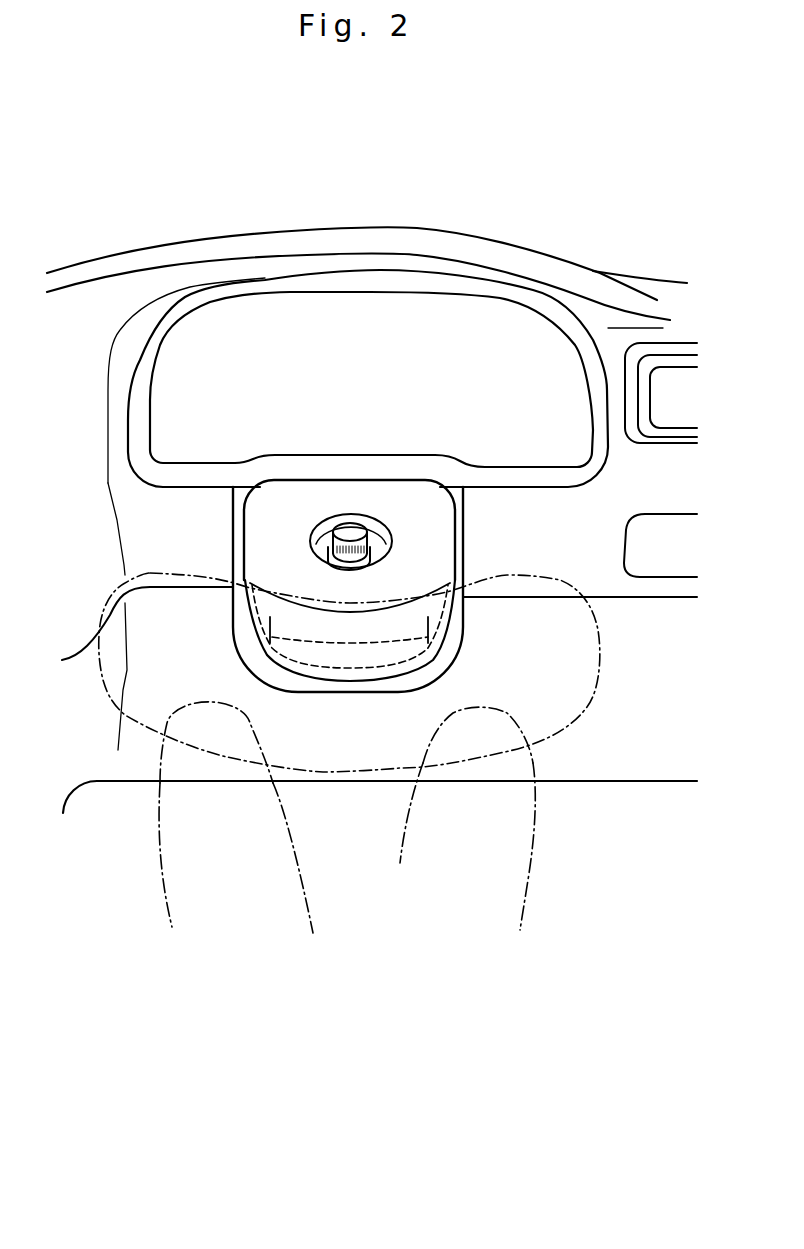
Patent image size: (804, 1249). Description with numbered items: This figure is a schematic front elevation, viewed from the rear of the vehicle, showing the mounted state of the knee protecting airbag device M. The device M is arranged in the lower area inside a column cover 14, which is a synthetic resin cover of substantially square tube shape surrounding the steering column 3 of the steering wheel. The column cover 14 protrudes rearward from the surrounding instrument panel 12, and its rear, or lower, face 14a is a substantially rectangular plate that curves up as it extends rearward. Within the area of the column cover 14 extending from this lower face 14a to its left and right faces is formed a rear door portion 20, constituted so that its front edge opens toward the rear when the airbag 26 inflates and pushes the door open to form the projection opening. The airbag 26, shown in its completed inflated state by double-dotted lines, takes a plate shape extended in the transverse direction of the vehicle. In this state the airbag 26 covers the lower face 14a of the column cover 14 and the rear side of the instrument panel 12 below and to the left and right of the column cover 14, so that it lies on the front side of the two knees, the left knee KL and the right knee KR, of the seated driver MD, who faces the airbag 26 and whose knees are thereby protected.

The steering column 3 is at (350, 519).
The instrument panel 12 is at (488, 495).
The column cover 14 is at (316, 478).
The lower face of column cover 14a is at (300, 652).
The rear door portion 20 is at (347, 662).
The airbag 26 is at (585, 673).
The knee protecting airbag device M is at (440, 648).
The left knee KL is at (168, 836).
The right knee KR is at (526, 840).
The driver MD is at (160, 913).